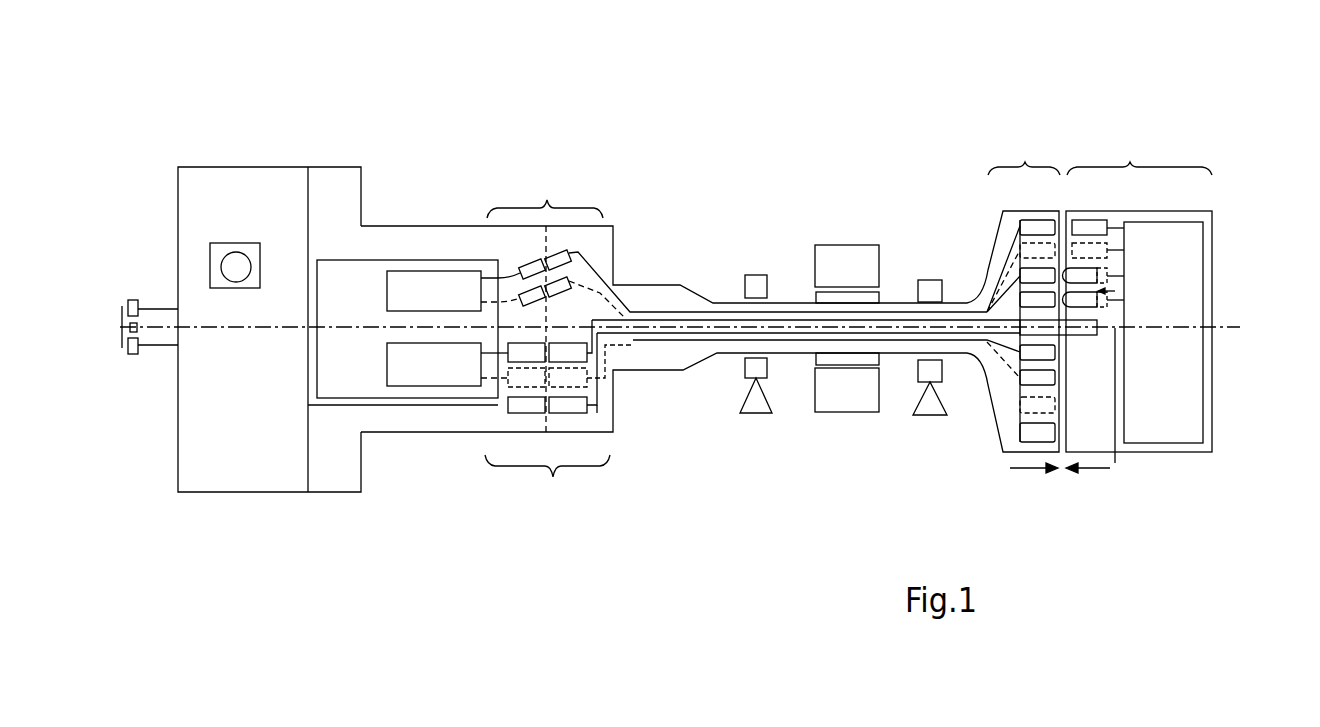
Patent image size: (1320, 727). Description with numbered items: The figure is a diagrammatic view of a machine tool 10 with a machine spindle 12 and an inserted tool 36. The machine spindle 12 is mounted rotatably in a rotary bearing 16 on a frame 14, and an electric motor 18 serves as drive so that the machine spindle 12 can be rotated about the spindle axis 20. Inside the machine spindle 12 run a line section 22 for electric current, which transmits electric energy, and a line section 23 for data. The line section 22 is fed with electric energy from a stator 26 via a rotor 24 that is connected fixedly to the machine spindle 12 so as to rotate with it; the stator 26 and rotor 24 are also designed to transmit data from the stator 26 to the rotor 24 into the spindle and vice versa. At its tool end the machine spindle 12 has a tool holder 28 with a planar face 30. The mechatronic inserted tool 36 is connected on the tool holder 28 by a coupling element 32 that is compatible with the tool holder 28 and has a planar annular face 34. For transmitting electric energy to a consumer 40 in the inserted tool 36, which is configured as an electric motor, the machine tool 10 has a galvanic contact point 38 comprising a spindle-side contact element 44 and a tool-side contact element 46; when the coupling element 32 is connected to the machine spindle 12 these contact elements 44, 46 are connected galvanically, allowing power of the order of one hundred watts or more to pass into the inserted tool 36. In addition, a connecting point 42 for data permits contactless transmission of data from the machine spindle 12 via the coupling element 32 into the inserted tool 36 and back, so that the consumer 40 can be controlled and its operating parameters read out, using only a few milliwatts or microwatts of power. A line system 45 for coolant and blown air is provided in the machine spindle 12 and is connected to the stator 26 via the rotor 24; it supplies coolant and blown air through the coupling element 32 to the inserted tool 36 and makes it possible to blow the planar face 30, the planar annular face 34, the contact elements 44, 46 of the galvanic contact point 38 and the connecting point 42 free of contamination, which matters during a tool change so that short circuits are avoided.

The machine tool 10 is at (838, 146).
The machine spindle 12 is at (692, 353).
The frame 14 is at (758, 412).
The rotary bearing 16 is at (757, 274).
The electric motor 18 is at (847, 405).
The spindle axis 20 is at (1206, 412).
The line section for electric current 22 is at (672, 312).
The line section for data 23 is at (722, 342).
The rotor 24 is at (1038, 306).
The stator 26 is at (1138, 301).
The tool holder 28 is at (590, 426).
The planar face 30 is at (562, 420).
The coupling element 32 is at (394, 420).
The planar annular face 34 is at (536, 242).
The inserted tool 36 is at (156, 350).
The galvanic contact point 38 is at (545, 196).
The consumer 40 is at (235, 243).
The connecting point for data 42 is at (547, 481).
The spindle-side contact element 44 is at (572, 255).
The line system 45 is at (785, 334).
The tool-side contact element 46 is at (526, 264).